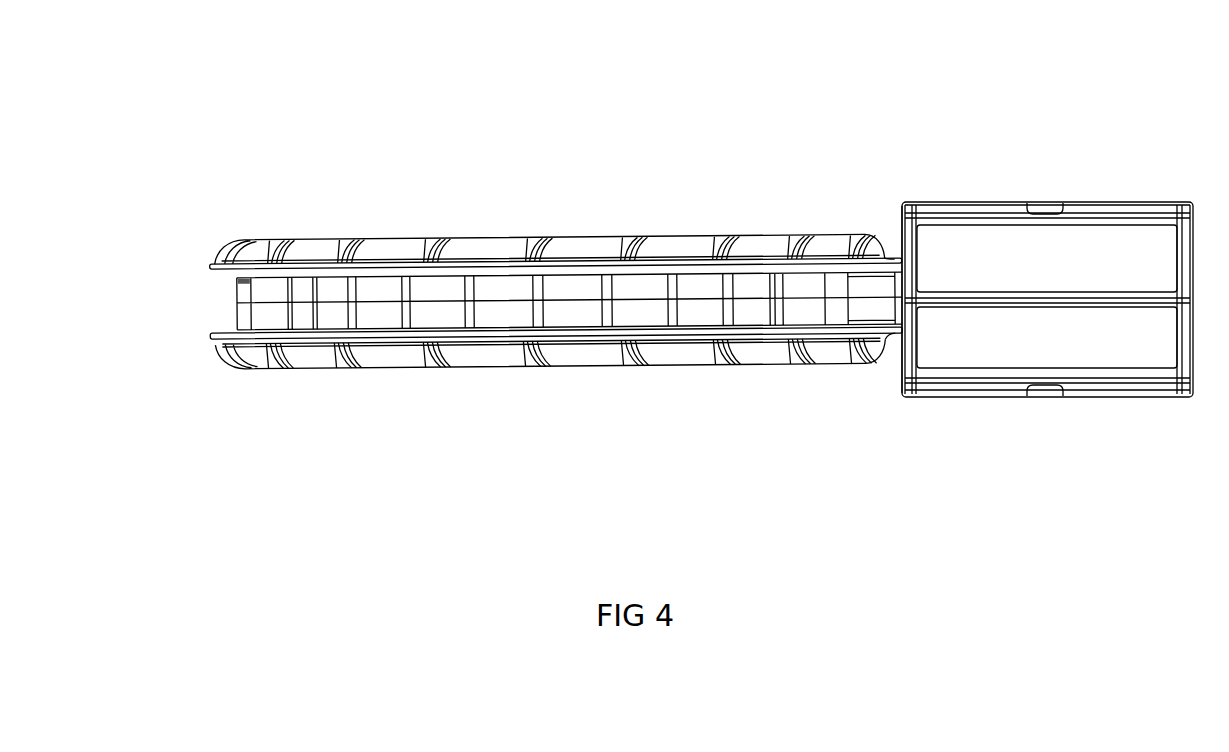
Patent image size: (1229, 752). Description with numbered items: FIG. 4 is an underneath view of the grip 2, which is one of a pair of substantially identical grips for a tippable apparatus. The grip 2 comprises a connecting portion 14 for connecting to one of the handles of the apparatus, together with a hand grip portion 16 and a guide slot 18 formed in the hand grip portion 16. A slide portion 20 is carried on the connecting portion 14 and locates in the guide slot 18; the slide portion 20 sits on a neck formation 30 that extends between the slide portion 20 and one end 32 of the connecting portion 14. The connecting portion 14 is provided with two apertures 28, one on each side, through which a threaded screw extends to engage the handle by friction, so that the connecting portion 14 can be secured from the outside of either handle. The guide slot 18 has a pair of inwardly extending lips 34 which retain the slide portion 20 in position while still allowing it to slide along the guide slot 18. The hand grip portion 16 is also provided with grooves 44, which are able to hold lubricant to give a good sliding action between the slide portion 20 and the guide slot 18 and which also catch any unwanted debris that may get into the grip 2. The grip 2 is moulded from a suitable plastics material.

The grip 2 is at (468, 105).
The connecting portion 14 is at (1035, 301).
The hand grip portion 16 is at (577, 236).
The guide slot 18 is at (227, 297).
The slide portion 20 is at (838, 310).
The aperture 28 is at (1048, 207).
The neck formation 30 is at (896, 322).
The end of the connecting portion 32 is at (903, 202).
The inwardly extending lips 34 is at (212, 268).
The grooves 44 is at (364, 309).